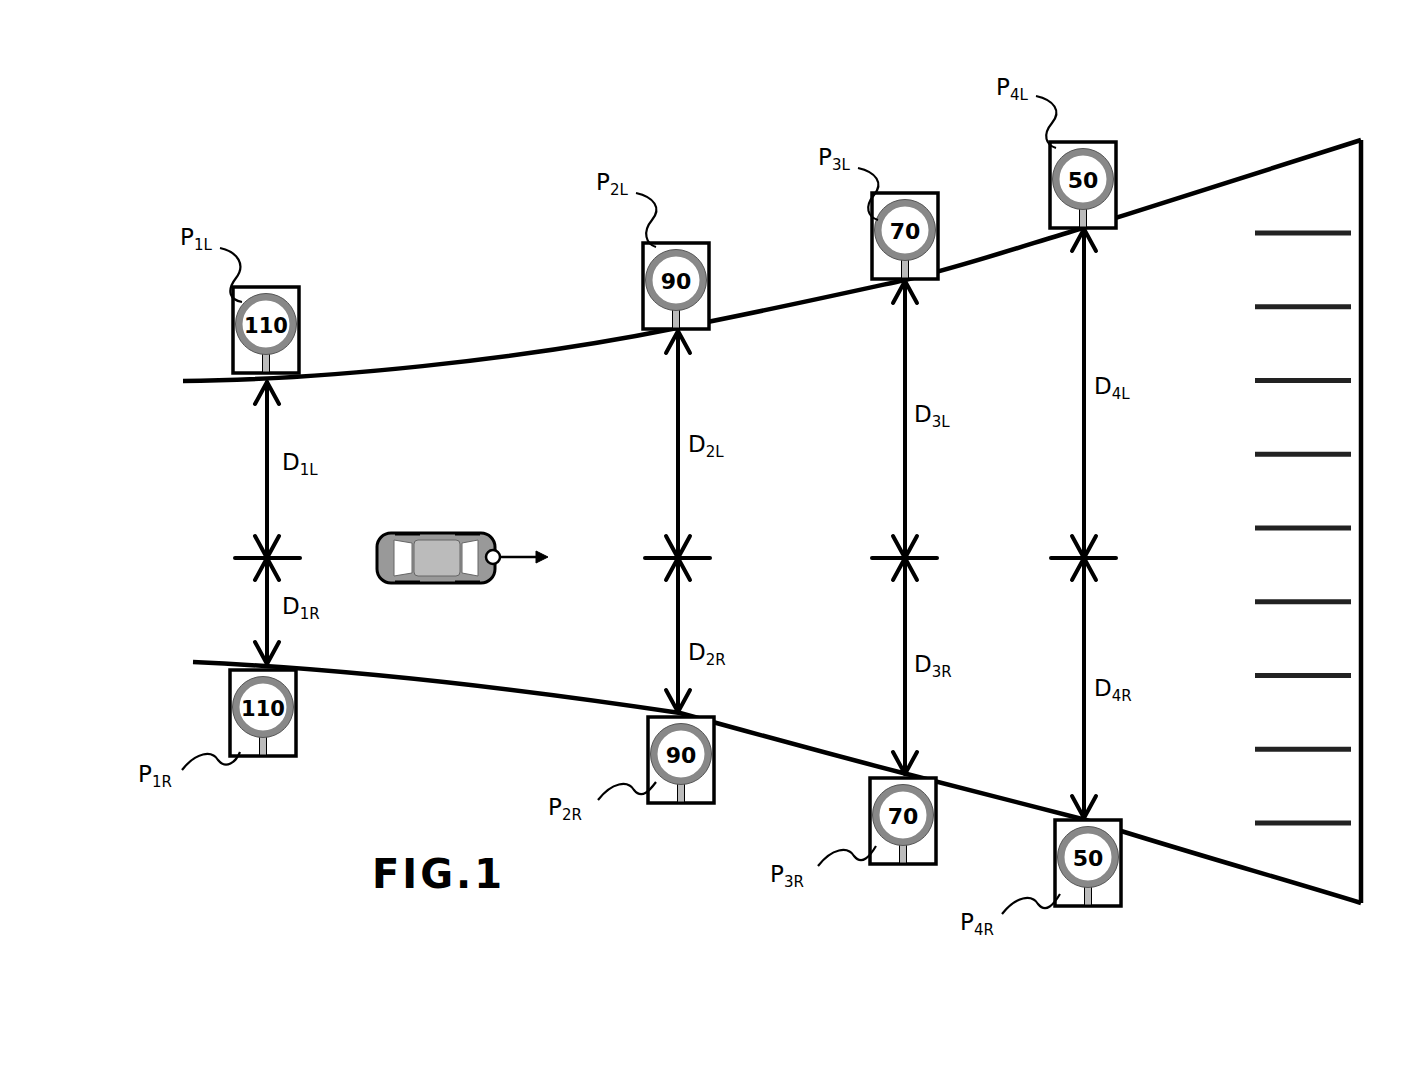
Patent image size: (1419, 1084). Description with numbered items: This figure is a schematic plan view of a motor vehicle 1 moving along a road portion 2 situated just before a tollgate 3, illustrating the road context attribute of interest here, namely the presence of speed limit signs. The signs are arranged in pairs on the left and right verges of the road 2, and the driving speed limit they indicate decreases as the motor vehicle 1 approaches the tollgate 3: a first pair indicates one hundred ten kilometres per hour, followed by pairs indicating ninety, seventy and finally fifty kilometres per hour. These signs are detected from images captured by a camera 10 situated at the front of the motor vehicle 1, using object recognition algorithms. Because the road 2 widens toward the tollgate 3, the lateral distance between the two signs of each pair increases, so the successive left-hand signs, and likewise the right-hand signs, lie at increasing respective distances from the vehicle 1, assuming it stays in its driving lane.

The motor vehicle 1 is at (486, 584).
The road portion 2 is at (792, 300).
The tollgate 3 is at (1338, 220).
The camera 10 is at (498, 550).